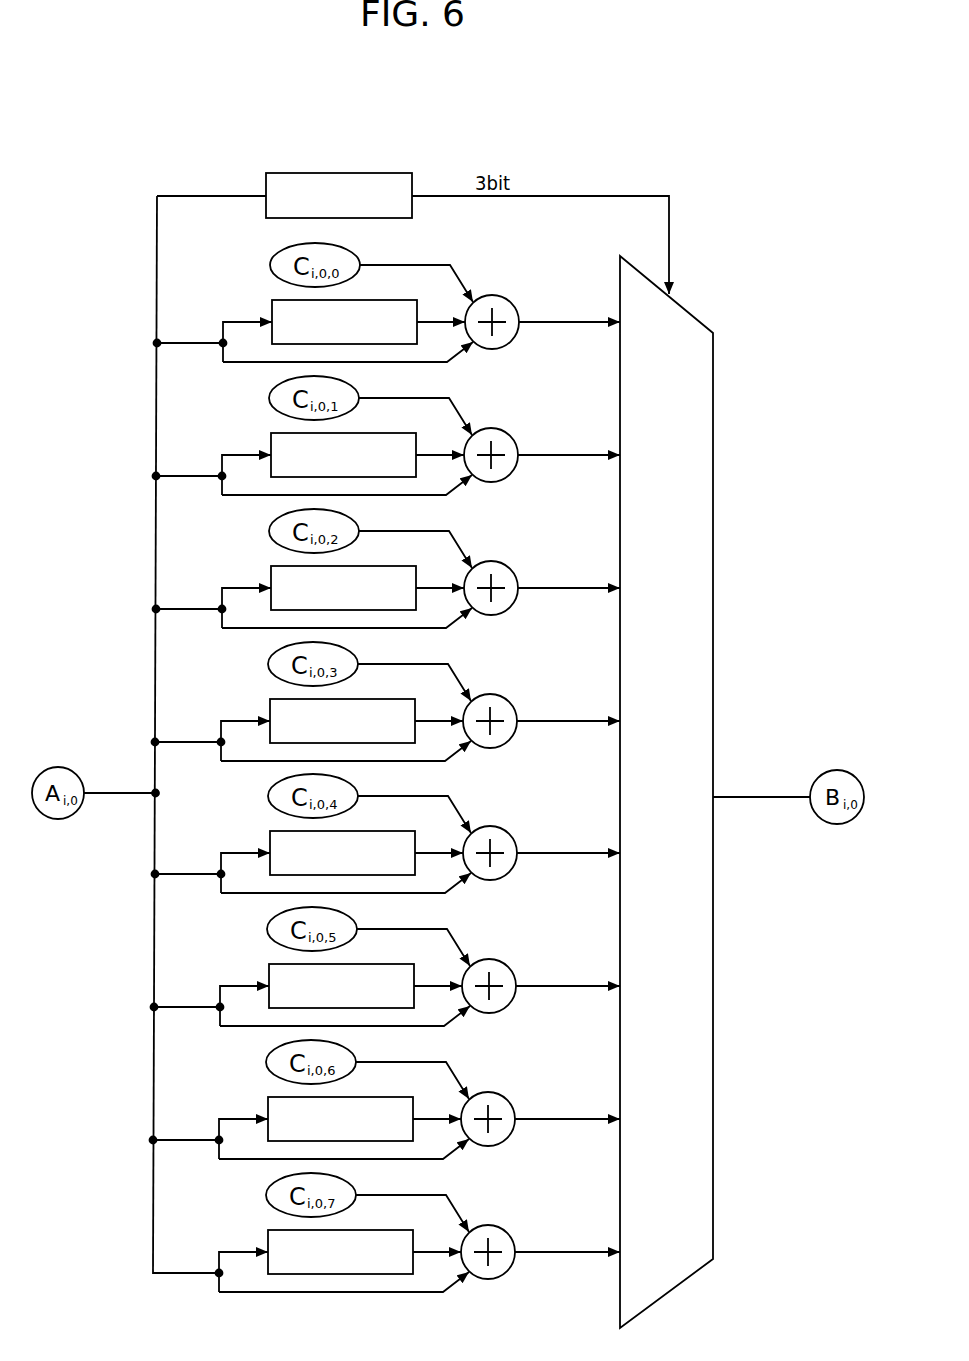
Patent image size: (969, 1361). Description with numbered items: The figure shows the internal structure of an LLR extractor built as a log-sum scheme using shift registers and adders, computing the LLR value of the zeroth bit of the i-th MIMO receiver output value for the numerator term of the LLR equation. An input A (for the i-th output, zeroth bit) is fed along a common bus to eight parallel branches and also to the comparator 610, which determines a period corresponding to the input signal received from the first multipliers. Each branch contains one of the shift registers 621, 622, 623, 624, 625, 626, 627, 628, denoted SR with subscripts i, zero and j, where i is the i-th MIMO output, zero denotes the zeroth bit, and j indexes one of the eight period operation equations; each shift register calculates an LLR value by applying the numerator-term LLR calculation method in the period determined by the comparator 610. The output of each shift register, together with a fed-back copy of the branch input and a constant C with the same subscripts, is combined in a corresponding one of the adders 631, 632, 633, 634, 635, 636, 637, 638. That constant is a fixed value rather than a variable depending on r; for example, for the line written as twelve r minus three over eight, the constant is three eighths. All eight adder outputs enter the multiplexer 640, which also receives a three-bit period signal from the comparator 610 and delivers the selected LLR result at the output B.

The comparator 610 is at (378, 173).
The shift register 621 is at (354, 308).
The shift register 622 is at (353, 441).
The shift register 623 is at (353, 574).
The shift register 624 is at (352, 707).
The shift register 625 is at (352, 839).
The shift register 626 is at (351, 972).
The shift register 627 is at (350, 1105).
The shift register 628 is at (350, 1238).
The adder 631 is at (512, 310).
The adder 632 is at (511, 443).
The adder 633 is at (511, 576).
The adder 634 is at (510, 709).
The adder 635 is at (510, 841).
The adder 636 is at (509, 974).
The adder 637 is at (508, 1107).
The adder 638 is at (508, 1240).
The multiplexer 640 is at (693, 315).